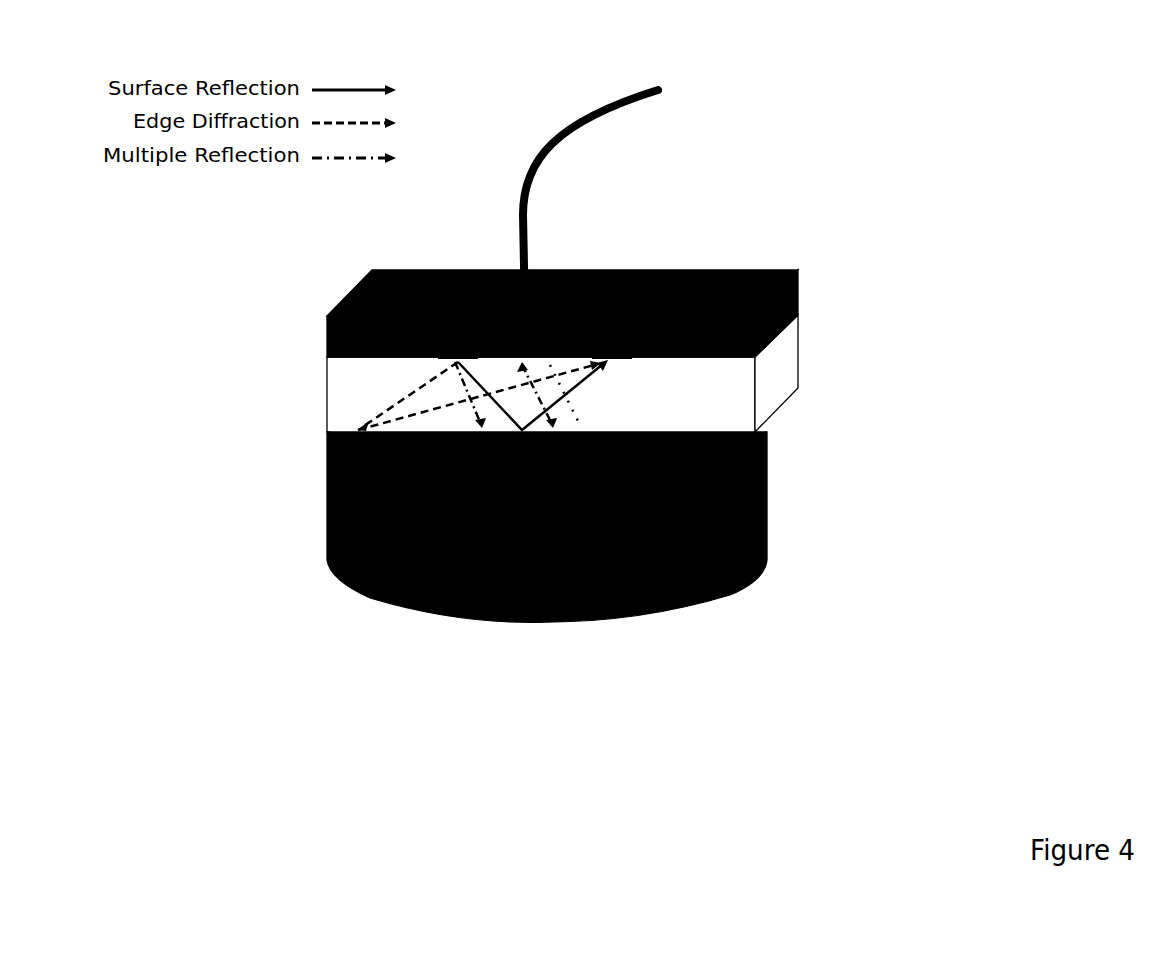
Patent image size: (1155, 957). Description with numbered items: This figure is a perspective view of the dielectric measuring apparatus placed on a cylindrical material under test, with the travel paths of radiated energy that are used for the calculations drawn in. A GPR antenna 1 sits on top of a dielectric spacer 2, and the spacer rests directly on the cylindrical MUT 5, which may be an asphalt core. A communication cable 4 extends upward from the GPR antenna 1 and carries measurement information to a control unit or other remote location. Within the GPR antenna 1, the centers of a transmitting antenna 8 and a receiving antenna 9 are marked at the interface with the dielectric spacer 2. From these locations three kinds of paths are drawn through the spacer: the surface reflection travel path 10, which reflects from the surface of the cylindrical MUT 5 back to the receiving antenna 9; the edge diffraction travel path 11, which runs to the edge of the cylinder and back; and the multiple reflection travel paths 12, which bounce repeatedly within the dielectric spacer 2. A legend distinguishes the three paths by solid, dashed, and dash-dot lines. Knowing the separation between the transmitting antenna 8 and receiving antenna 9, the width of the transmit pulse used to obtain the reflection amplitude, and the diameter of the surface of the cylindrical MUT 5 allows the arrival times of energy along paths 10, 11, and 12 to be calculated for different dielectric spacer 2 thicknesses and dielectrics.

The GPR antenna 1 is at (410, 282).
The dielectric spacer 2 is at (337, 400).
The communication cable 4 is at (589, 100).
The cylindrical MUT 5 is at (328, 518).
The transmitting antenna 8 is at (462, 350).
The receiving antenna 9 is at (612, 352).
The surface reflection travel path 10 is at (547, 430).
The edge diffraction travel path 11 is at (417, 420).
The multiple reflection travel paths 12 is at (582, 380).